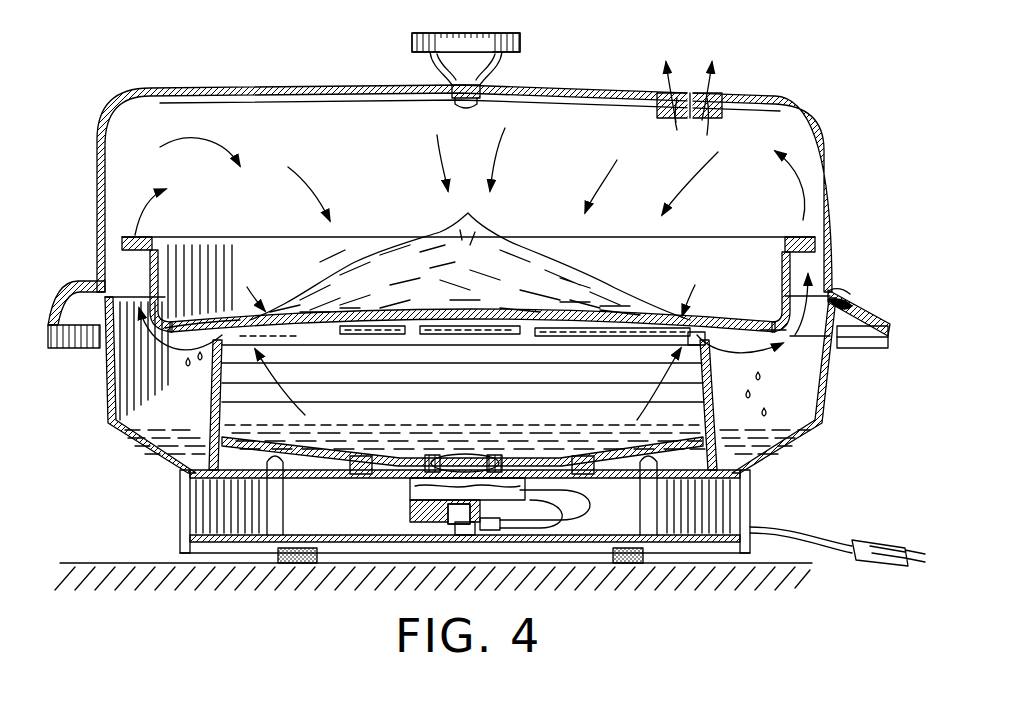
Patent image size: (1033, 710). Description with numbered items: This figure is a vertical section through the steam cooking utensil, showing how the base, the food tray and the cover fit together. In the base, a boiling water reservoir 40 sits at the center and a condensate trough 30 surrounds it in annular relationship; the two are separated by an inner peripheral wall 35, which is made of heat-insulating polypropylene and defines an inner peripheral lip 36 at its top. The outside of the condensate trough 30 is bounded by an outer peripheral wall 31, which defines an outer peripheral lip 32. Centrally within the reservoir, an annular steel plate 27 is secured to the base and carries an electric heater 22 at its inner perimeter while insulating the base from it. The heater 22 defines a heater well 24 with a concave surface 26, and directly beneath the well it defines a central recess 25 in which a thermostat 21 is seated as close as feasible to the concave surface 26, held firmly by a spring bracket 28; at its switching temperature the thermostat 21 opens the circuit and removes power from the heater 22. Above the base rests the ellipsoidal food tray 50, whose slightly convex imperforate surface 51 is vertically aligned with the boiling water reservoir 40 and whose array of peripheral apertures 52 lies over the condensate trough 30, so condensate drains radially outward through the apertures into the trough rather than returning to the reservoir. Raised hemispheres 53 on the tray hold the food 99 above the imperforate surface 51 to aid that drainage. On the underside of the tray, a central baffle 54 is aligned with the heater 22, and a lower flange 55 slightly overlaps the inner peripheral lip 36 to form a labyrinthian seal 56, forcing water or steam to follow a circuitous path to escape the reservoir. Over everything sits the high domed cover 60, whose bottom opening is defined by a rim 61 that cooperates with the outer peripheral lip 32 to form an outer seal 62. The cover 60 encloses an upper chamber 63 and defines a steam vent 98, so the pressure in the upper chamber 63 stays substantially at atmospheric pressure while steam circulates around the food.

The thermostat 21 is at (465, 524).
The electric heater 22 is at (408, 487).
The heater well 24 is at (466, 458).
The central recess 25 is at (486, 526).
The concave surface 26 is at (420, 508).
The steel plate 27 is at (530, 460).
The spring bracket 28 is at (512, 530).
The condensate trough 30 is at (467, 385).
The outer peripheral wall 31 is at (824, 404).
The outer peripheral lip 32 is at (853, 290).
The inner peripheral wall 35 is at (216, 372).
The inner peripheral lip 36 is at (698, 345).
The boiling water reservoir 40 is at (463, 407).
The food tray 50 is at (708, 330).
The imperforate surface 51 is at (466, 332).
The peripheral apertures 52 is at (196, 326).
The raised hemispheres 53 is at (340, 302).
The central baffle 54 is at (525, 334).
The lower flange 55 is at (684, 337).
The labyrinthian seal 56 is at (260, 340).
The high domed cover 60 is at (834, 137).
The rim 61 is at (841, 290).
The outer seal 62 is at (847, 308).
The upper chamber 63 is at (470, 181).
The steam vent 98 is at (668, 92).
The food 99 is at (486, 240).